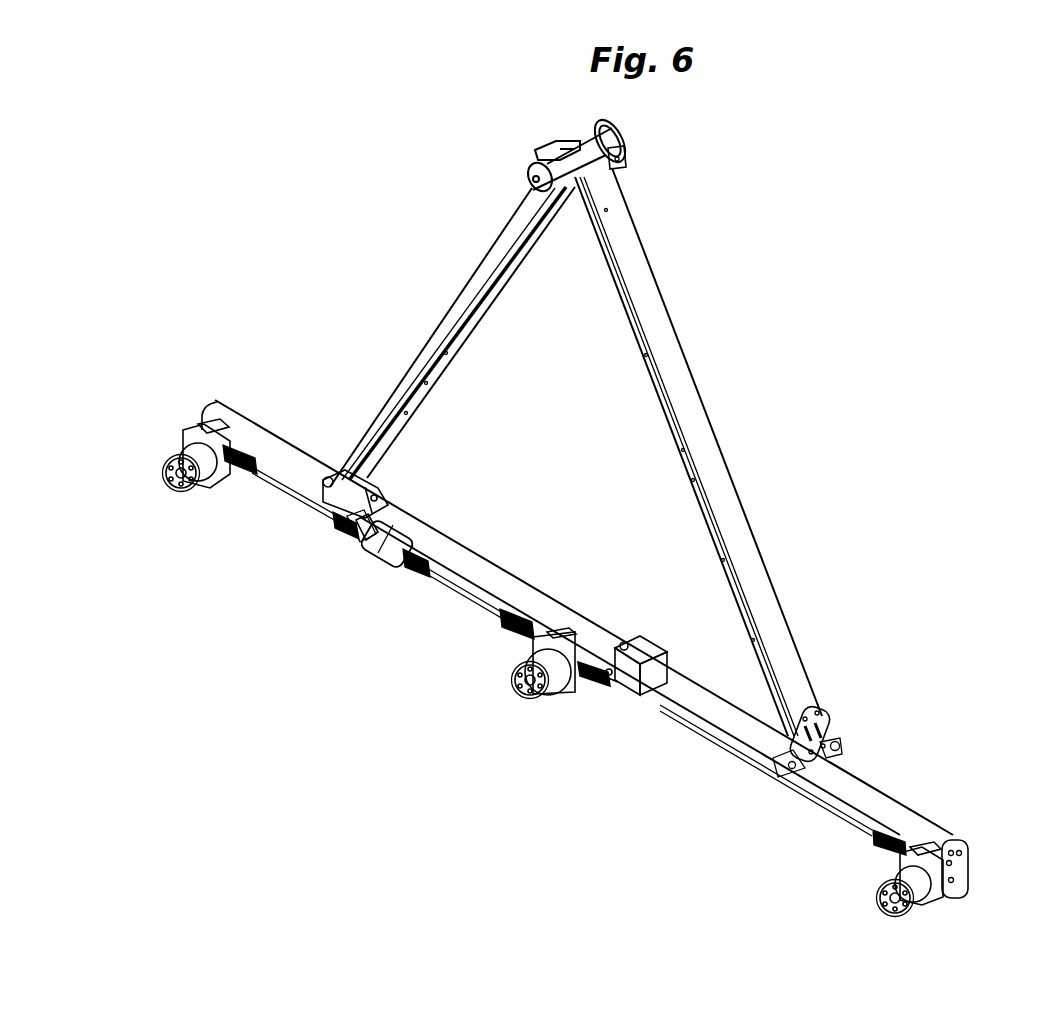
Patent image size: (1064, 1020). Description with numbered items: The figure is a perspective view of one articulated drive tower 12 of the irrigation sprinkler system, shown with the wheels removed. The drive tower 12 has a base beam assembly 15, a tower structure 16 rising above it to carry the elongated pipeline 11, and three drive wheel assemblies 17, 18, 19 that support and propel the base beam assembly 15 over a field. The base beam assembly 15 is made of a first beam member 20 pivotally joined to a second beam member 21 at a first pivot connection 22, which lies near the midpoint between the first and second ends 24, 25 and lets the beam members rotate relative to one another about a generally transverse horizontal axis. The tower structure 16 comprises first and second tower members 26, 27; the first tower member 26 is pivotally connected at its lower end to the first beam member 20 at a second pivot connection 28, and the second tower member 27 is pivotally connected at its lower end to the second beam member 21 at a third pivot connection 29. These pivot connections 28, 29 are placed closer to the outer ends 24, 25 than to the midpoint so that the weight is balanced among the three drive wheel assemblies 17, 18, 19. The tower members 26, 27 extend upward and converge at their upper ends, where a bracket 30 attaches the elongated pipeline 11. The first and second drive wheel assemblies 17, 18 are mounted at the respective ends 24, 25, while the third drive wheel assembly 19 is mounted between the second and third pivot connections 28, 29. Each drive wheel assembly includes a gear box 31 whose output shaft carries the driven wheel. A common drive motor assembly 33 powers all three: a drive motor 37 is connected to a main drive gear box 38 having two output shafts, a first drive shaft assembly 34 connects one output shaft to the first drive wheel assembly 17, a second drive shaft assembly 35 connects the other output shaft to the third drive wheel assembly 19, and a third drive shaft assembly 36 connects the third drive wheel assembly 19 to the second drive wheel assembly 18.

The elongated pipeline 11 is at (582, 134).
The drive tower 12 is at (367, 303).
The base beam assembly 15 is at (455, 550).
The tower structure 16 is at (680, 370).
The first drive wheel assembly 17 is at (173, 485).
The second drive wheel assembly 18 is at (880, 896).
The third drive wheel assembly 19 is at (512, 684).
The first beam member 20 is at (548, 606).
The second beam member 21 is at (875, 802).
The first pivot connection 22 is at (640, 634).
The first end 24 is at (217, 398).
The second end 25 is at (957, 840).
The first tower member 26 is at (475, 272).
The second tower member 27 is at (640, 286).
The second pivot connection 28 is at (328, 477).
The third pivot connection 29 is at (838, 744).
The bracket 30 is at (622, 168).
The gear box 31 is at (186, 438).
The common drive motor assembly 33 is at (360, 558).
The first drive shaft assembly 34 is at (280, 494).
The second drive shaft assembly 35 is at (460, 592).
The third drive shaft assembly 36 is at (703, 743).
The drive motor 37 is at (385, 550).
The main drive gear box 38 is at (360, 542).